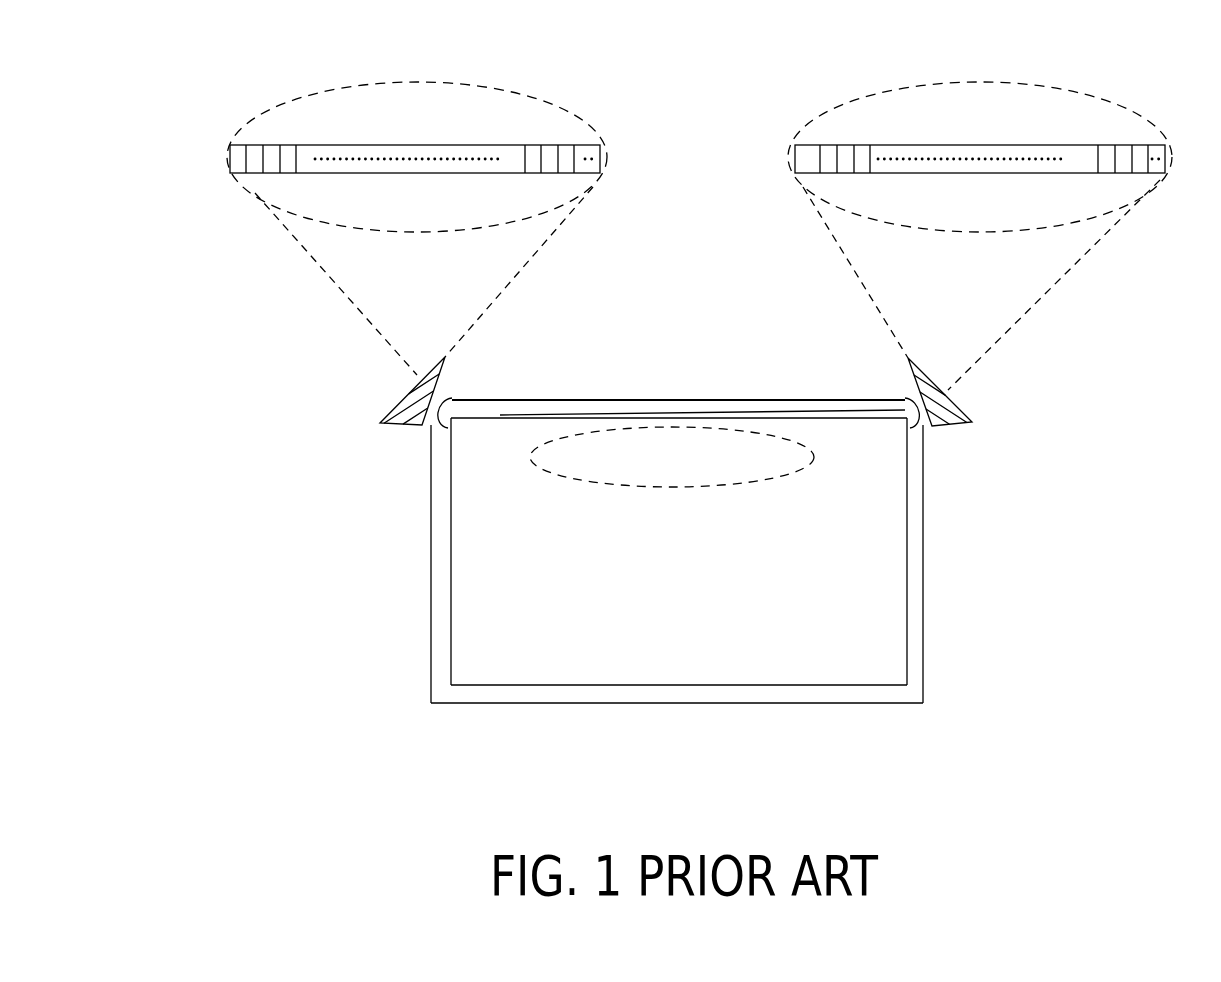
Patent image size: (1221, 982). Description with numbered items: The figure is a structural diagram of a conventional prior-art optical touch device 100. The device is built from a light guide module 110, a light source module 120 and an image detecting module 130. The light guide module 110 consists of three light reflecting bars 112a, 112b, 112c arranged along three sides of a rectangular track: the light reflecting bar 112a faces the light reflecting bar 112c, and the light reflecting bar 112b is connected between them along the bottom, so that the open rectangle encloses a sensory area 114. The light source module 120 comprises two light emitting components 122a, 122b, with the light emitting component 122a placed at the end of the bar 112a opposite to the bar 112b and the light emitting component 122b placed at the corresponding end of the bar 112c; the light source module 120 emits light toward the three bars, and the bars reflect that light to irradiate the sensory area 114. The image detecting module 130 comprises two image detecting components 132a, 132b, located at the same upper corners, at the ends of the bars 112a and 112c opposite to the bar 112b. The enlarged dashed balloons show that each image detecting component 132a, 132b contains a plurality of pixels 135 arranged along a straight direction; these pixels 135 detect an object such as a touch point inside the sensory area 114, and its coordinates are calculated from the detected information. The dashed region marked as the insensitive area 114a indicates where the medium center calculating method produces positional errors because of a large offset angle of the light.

The optical touch device 100 is at (380, 789).
The light guide module 110 is at (798, 627).
The light reflecting bar 112a is at (439, 672).
The light reflecting bar 112b is at (900, 697).
The light reflecting bar 112c is at (917, 633).
The sensory area 114 is at (487, 620).
The insensitive area 114a is at (775, 453).
The light source module 120 is at (542, 489).
The light emitting component 122a is at (431, 445).
The light emitting component 122b is at (500, 415).
The image detecting module 130 is at (676, 341).
The image detecting component 132a is at (453, 388).
The image detecting component 132b is at (903, 392).
The pixels 135 is at (255, 152).